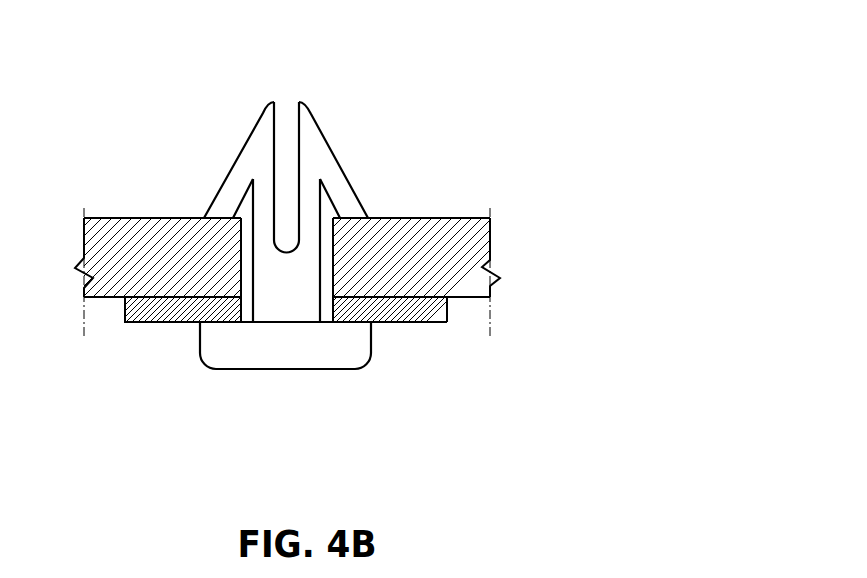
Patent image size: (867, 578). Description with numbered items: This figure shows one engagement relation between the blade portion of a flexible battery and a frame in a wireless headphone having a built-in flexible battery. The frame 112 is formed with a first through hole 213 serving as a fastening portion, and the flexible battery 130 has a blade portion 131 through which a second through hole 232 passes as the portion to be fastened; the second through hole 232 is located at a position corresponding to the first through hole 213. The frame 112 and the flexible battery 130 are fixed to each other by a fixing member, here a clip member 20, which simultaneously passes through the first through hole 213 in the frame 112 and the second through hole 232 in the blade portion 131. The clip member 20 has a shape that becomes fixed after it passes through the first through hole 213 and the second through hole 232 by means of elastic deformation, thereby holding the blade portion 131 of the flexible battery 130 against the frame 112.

The clip member 20 is at (367, 370).
The frame 112 is at (457, 240).
The flexible battery 130 is at (433, 322).
The blade portion 131 is at (448, 313).
The first through hole 213 is at (333, 247).
The second through hole 232 is at (332, 302).